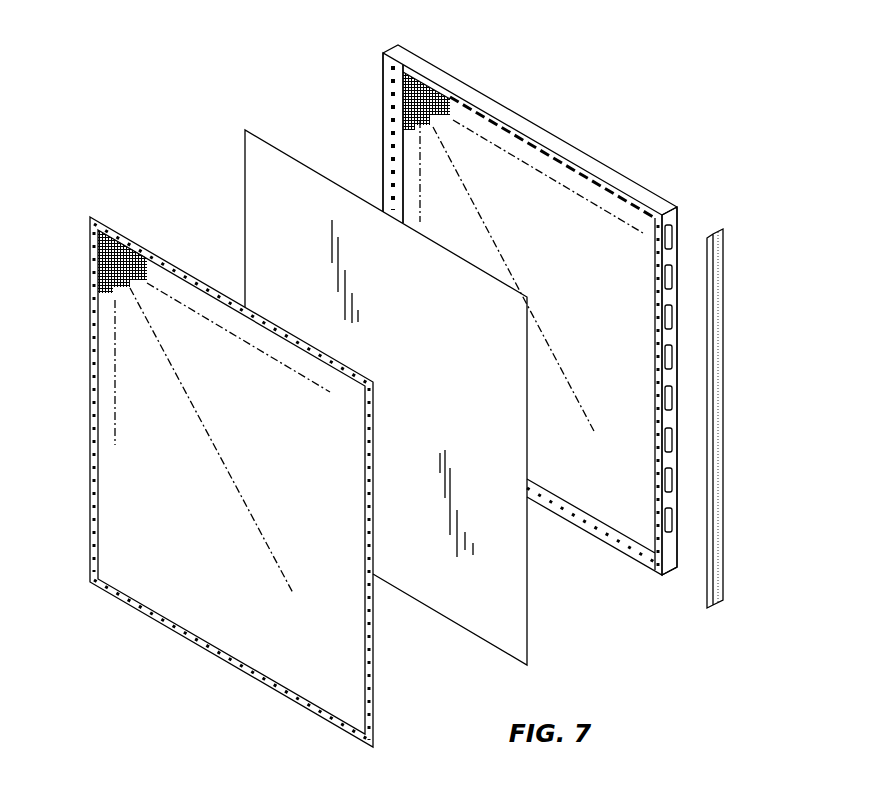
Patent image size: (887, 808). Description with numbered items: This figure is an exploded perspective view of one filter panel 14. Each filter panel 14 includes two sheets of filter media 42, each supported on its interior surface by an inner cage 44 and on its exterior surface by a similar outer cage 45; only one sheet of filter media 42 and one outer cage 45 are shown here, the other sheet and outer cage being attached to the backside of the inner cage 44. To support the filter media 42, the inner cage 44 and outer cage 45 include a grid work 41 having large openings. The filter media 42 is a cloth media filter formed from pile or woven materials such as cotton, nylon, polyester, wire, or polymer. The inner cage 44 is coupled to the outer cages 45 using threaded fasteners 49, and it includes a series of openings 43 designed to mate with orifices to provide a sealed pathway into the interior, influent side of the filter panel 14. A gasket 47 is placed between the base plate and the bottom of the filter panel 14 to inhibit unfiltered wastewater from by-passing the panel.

The filter panel 14 is at (196, 63).
The grid work 41 is at (122, 240).
The filter media 42 is at (290, 155).
The openings 43 is at (677, 245).
The inner cage 44 is at (520, 113).
The outer cage 45 is at (90, 280).
The gasket 47 is at (705, 583).
The threaded fasteners 49 is at (390, 167).